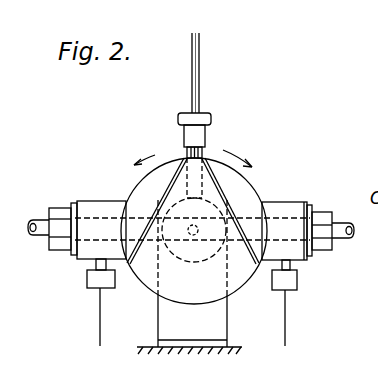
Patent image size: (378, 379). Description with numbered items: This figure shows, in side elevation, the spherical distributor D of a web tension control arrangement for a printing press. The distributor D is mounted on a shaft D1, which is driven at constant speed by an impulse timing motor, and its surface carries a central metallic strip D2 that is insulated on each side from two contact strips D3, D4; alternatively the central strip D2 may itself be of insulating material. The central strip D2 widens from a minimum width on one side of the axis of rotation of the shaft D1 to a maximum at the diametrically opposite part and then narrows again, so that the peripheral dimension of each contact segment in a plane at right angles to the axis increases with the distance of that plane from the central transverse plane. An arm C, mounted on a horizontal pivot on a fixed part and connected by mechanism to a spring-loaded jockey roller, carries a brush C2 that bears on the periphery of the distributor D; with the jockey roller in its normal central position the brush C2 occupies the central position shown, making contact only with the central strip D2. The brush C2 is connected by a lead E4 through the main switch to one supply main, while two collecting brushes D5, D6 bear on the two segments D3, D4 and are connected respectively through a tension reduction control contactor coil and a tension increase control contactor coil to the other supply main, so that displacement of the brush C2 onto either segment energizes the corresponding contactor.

The lead E4 is at (198, 72).
The arm C is at (199, 113).
The brush C2 is at (206, 142).
The spherical distributor D is at (139, 180).
The contact strip D3 is at (168, 173).
The central metallic strip D2 is at (203, 177).
The contact strip D4 is at (243, 192).
The shaft D1 is at (279, 231).
The collecting brush D5 is at (94, 265).
The collecting brush D6 is at (300, 266).